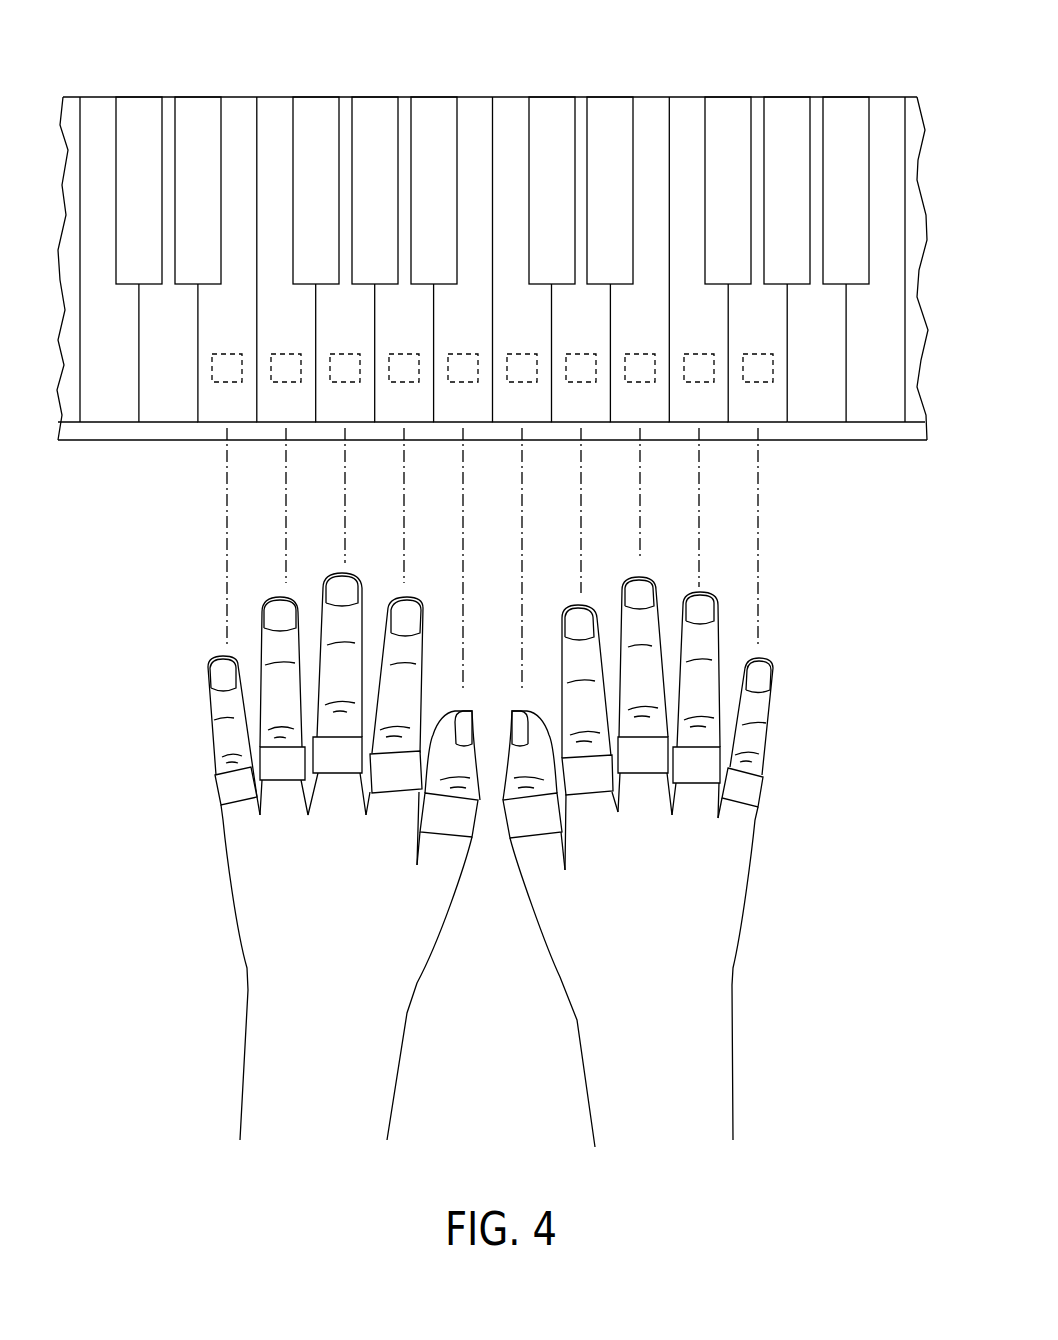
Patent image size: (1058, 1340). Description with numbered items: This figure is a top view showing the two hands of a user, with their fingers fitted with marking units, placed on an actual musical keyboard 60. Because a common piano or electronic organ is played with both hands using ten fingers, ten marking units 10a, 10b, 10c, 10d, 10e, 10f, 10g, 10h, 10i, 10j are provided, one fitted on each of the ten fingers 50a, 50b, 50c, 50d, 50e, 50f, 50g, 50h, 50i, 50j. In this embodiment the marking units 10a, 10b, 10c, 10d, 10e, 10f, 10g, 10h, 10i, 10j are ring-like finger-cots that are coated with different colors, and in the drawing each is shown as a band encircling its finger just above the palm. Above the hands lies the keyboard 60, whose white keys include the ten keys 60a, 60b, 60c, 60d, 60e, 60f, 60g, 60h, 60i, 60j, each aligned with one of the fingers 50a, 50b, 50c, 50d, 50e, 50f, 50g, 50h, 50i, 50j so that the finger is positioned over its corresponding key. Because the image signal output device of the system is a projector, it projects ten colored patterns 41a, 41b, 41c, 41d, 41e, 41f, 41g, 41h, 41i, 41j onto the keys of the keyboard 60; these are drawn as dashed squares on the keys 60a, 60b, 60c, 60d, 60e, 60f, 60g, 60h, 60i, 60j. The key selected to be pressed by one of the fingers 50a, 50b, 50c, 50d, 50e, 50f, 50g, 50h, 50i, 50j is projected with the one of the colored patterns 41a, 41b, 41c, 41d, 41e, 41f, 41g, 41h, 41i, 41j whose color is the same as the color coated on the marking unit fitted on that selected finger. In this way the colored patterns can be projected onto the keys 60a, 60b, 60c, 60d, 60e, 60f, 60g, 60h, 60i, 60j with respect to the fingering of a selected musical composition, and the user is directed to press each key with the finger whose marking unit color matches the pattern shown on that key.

The musical keyboard 60 is at (477, 91).
The key 60a is at (215, 413).
The key 60b is at (274, 413).
The key 60c is at (333, 413).
The key 60d is at (392, 413).
The key 60e is at (451, 413).
The key 60f is at (533, 413).
The key 60g is at (592, 413).
The key 60h is at (651, 413).
The key 60i is at (710, 413).
The key 60j is at (769, 413).
The colored pattern 41a is at (226, 354).
The colored pattern 41b is at (285, 354).
The colored pattern 41c is at (344, 354).
The colored pattern 41d is at (403, 354).
The colored pattern 41e is at (462, 354).
The colored pattern 41f is at (521, 354).
The colored pattern 41g is at (580, 354).
The colored pattern 41h is at (639, 354).
The colored pattern 41i is at (698, 354).
The colored pattern 41j is at (757, 354).
The finger 50a is at (208, 710).
The finger 50b is at (259, 630).
The finger 50c is at (323, 600).
The finger 50d is at (425, 628).
The finger 50e is at (477, 750).
The finger 50f is at (513, 848).
The finger 50g is at (560, 632).
The finger 50h is at (660, 602).
The finger 50i is at (720, 635).
The finger 50j is at (770, 710).
The marking unit 10a is at (215, 792).
The marking unit 10b is at (283, 780).
The marking unit 10c is at (338, 775).
The marking unit 10d is at (394, 795).
The marking unit 10e is at (444, 838).
The marking unit 10f is at (538, 840).
The marking unit 10g is at (588, 795).
The marking unit 10h is at (641, 775).
The marking unit 10i is at (694, 785).
The marking unit 10j is at (762, 795).